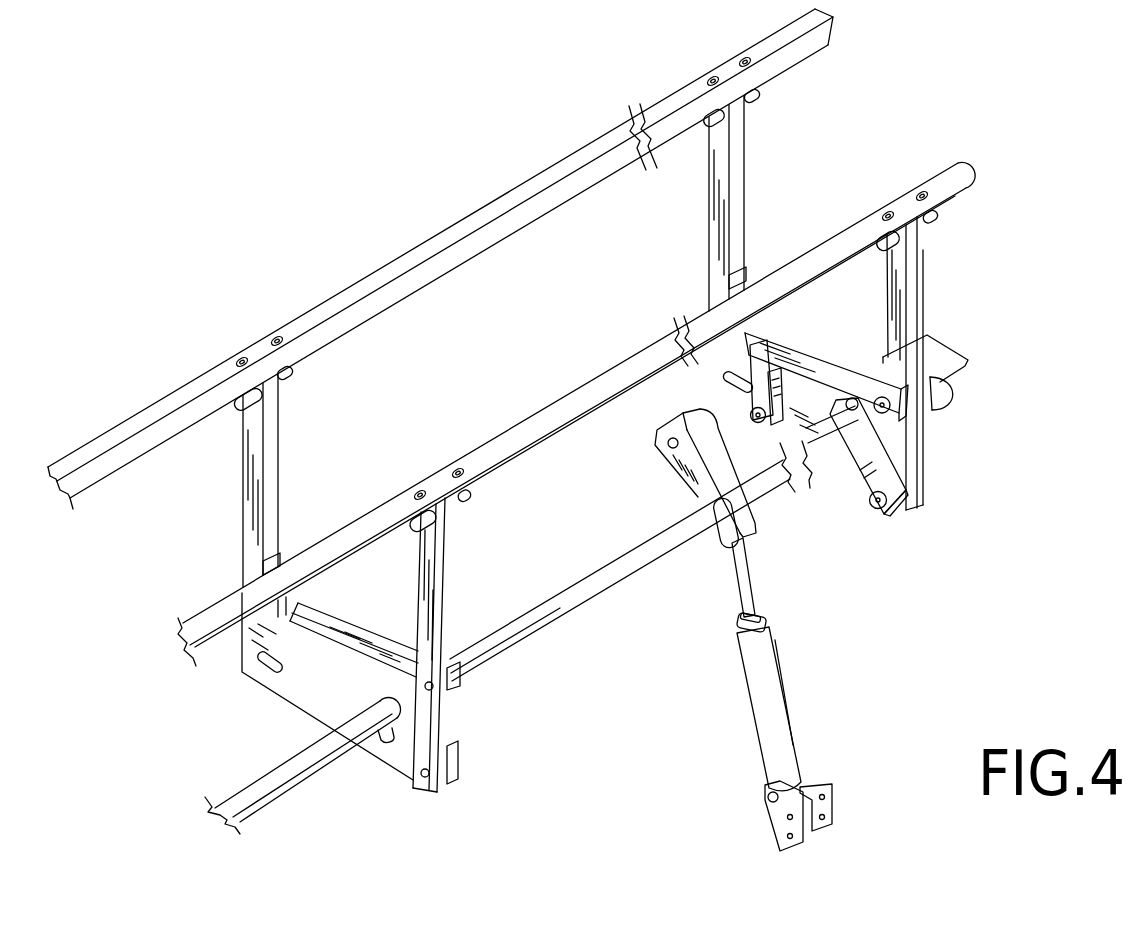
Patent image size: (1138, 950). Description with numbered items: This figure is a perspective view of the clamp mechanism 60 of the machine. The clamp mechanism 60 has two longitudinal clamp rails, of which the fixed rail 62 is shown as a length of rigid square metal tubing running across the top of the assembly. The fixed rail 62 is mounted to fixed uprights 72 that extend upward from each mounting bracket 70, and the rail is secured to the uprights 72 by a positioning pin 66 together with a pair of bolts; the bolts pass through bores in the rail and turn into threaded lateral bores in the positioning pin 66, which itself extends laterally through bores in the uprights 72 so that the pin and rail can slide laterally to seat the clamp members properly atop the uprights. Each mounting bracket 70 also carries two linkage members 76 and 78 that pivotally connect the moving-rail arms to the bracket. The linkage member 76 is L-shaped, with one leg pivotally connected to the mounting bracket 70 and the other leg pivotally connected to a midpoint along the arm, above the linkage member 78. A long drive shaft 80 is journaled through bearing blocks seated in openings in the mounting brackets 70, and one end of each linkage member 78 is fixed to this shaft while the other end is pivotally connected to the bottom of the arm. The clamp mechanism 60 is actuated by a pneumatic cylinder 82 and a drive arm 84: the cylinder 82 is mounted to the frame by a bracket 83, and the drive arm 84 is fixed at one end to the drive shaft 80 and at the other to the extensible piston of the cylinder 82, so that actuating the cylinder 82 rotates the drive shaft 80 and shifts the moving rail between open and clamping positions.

The clamp mechanism 60 is at (318, 191).
The fixed rail 62 is at (485, 210).
The positioning pin 66 is at (757, 97).
The mounting bracket 70 is at (313, 700).
The fixed uprights 72 is at (745, 174).
The linkage member 76 is at (378, 643).
The linkage member 78 is at (448, 745).
The drive shaft 80 is at (940, 390).
The pneumatic cylinder 82 is at (778, 715).
The bracket 83 is at (837, 790).
The drive arm 84 is at (688, 465).